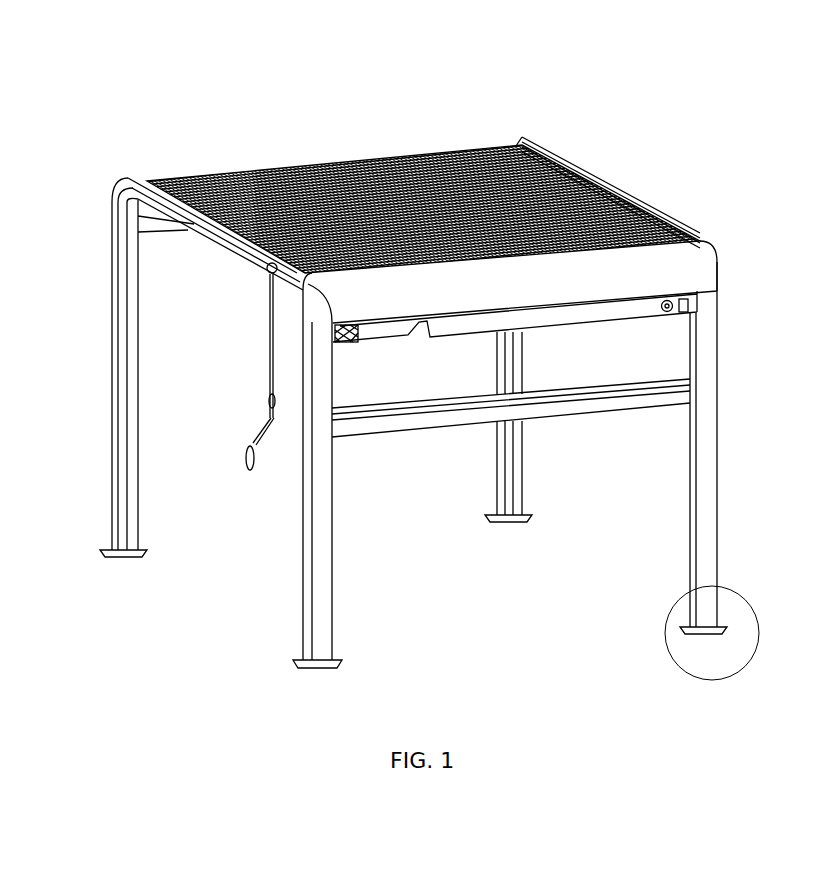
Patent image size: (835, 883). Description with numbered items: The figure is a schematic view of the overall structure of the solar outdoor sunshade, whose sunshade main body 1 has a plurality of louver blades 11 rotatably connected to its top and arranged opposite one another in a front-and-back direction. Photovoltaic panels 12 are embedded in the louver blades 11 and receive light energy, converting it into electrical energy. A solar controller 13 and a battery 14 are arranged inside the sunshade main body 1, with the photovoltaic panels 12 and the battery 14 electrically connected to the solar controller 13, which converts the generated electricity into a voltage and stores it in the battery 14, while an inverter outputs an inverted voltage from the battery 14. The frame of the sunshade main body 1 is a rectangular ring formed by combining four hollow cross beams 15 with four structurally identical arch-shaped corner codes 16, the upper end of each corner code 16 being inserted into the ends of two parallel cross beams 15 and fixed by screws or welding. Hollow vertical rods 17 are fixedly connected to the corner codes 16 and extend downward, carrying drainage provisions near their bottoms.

The sunshade main body 1 is at (411, 343).
The louver blades 11 is at (668, 172).
The photovoltaic panels 12 is at (603, 193).
The solar controller 13 is at (668, 313).
The battery 14 is at (552, 318).
The cross beams 15 is at (122, 204).
The corner codes 16 is at (523, 142).
The vertical rods 17 is at (710, 458).